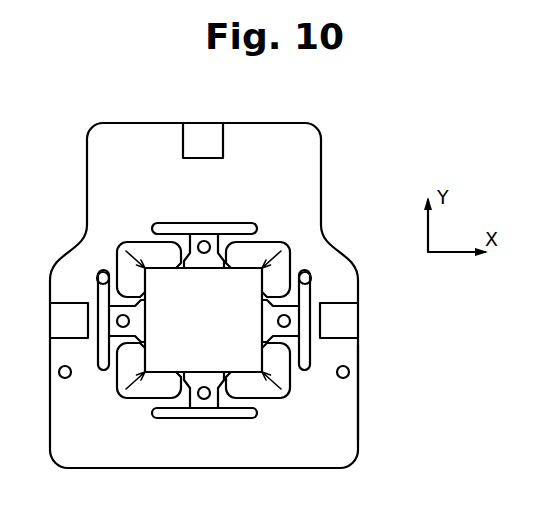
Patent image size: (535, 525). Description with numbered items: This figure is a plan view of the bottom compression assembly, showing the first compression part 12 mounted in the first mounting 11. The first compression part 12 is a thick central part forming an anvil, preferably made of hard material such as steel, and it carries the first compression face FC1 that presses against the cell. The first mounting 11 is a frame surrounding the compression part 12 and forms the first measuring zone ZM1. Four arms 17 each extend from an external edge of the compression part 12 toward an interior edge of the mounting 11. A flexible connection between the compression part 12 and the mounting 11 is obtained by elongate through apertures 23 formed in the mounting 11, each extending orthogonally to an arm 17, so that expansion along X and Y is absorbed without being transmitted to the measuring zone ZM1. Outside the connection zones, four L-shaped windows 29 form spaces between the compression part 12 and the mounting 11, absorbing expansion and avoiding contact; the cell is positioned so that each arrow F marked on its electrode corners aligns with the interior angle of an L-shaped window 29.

The first mounting 11 is at (242, 448).
The first compression part 12 is at (227, 302).
The arm 17 is at (268, 313).
The aperture 23 is at (212, 228).
The space 29 is at (145, 266).
The arrow F is at (146, 377).
The first compression face FC1 is at (357, 418).
The first measuring zone ZM1 is at (388, 329).